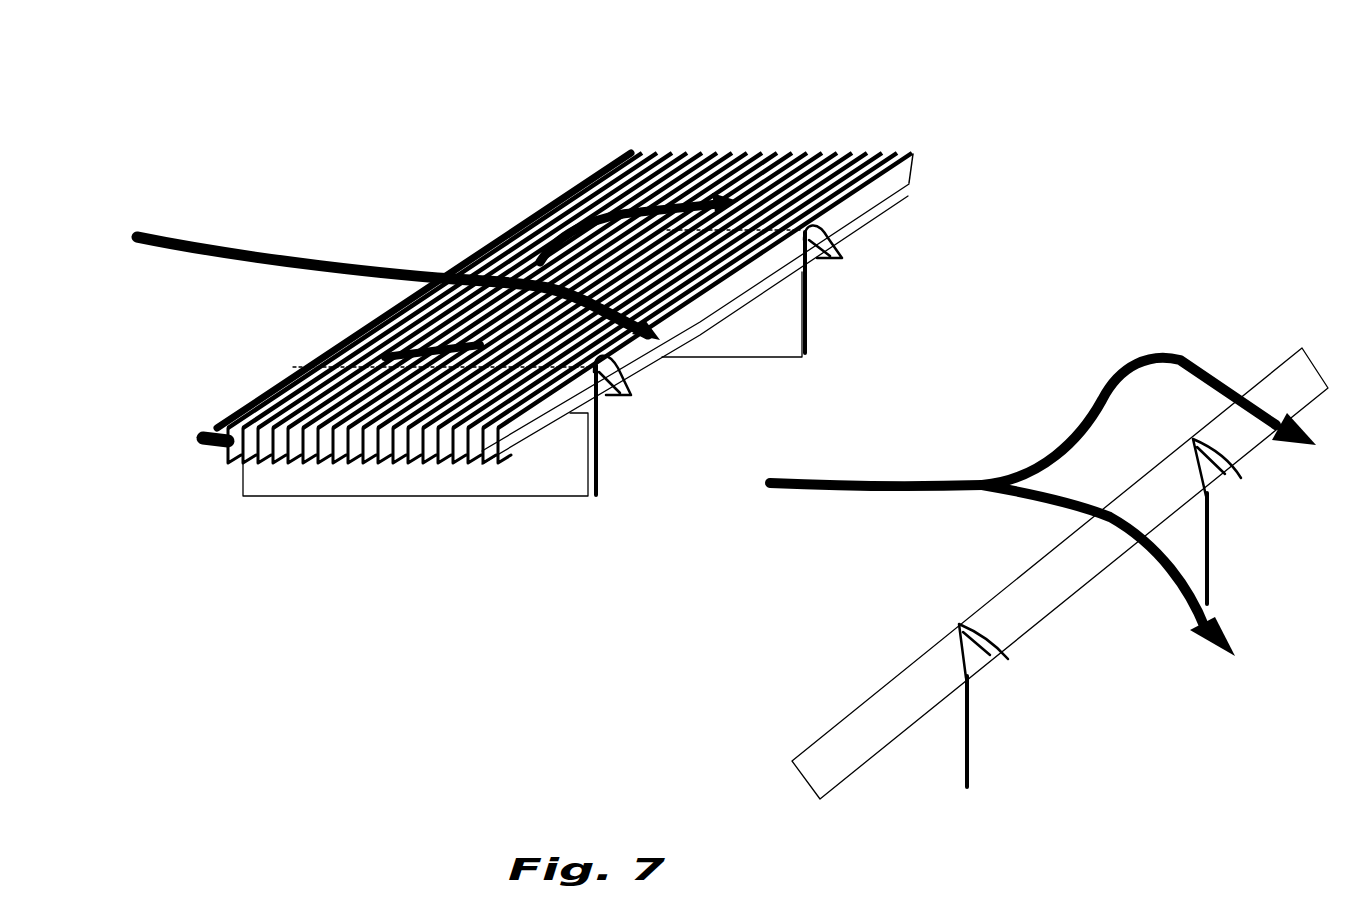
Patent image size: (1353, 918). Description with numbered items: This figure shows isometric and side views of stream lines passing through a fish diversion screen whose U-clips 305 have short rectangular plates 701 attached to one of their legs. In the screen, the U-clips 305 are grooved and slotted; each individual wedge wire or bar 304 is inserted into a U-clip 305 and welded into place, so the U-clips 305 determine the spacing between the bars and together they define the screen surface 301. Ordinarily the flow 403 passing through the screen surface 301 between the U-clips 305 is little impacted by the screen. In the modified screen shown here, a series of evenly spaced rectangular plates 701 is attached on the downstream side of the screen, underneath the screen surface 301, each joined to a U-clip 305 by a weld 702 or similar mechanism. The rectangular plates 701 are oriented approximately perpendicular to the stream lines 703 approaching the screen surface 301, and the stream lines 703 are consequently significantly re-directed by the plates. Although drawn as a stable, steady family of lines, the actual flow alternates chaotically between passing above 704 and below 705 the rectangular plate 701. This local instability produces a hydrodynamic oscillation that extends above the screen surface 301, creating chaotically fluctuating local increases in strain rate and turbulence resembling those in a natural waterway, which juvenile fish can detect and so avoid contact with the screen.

The screen surface 301 is at (770, 150).
The wedge wire or bar 304 is at (800, 777).
The U-clip 305 is at (845, 258).
The flow 403 is at (200, 437).
The rectangular plate 701 is at (373, 497).
The weld 702 is at (580, 413).
The stream lines 703 is at (272, 243).
The flow passing above the rectangular plate 704 is at (588, 228).
The flow passing below the rectangular plate 705 is at (400, 312).